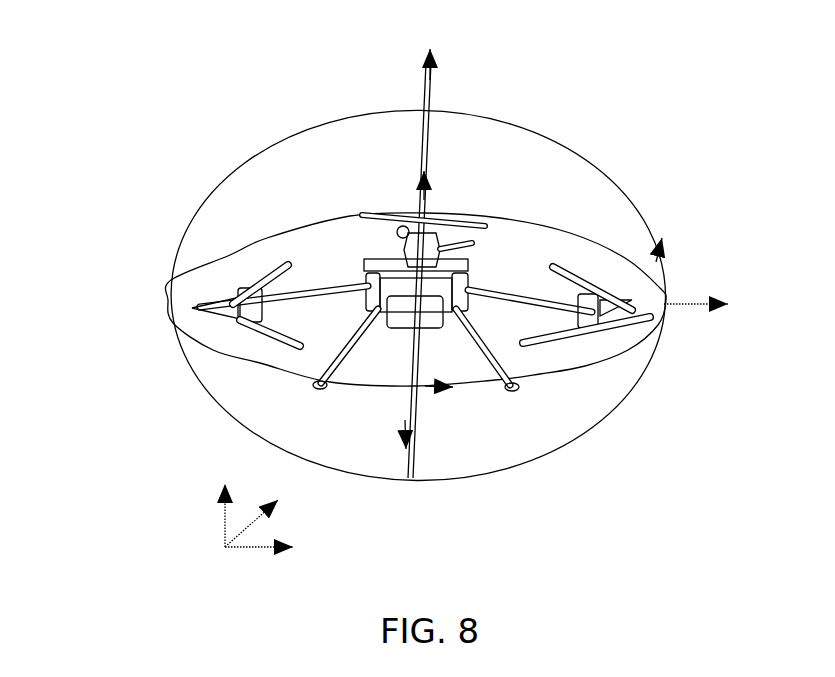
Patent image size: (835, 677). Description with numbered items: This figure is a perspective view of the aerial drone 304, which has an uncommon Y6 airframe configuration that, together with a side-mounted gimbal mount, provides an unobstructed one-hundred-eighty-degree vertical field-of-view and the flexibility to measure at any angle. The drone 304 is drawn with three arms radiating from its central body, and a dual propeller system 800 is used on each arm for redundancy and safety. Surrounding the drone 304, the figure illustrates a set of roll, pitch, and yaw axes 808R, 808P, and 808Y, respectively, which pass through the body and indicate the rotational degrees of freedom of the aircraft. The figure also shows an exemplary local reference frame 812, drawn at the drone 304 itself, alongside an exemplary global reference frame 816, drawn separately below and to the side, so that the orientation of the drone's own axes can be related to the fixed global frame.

The duel propeller system 800 is at (443, 206).
The aerial drone 304 is at (586, 267).
The pitch axis 808P is at (423, 150).
The roll axis 808R is at (618, 186).
The yaw axis 808Y is at (452, 385).
The local reference frame 812 is at (685, 306).
The global reference frame 816 is at (226, 520).